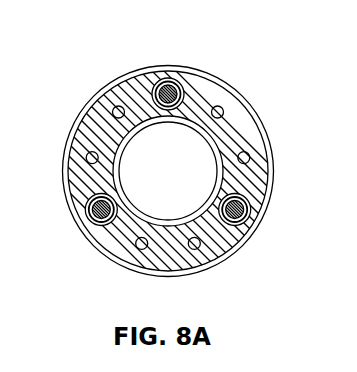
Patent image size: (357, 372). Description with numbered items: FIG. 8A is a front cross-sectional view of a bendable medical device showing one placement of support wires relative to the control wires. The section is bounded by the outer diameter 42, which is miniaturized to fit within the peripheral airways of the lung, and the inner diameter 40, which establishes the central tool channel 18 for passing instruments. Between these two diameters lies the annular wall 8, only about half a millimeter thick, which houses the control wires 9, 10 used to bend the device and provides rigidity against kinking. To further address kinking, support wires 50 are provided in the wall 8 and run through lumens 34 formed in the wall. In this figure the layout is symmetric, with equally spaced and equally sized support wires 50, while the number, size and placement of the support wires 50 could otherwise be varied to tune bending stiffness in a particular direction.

The annular wall 8 is at (125, 91).
The control wire 9 is at (160, 84).
The outer diameter 42 is at (211, 75).
The inner diameter 40 is at (68, 155).
The tool channel 18 is at (181, 180).
The support wires 50 is at (248, 157).
The control wire 10 is at (249, 218).
The lumens 34 is at (133, 255).